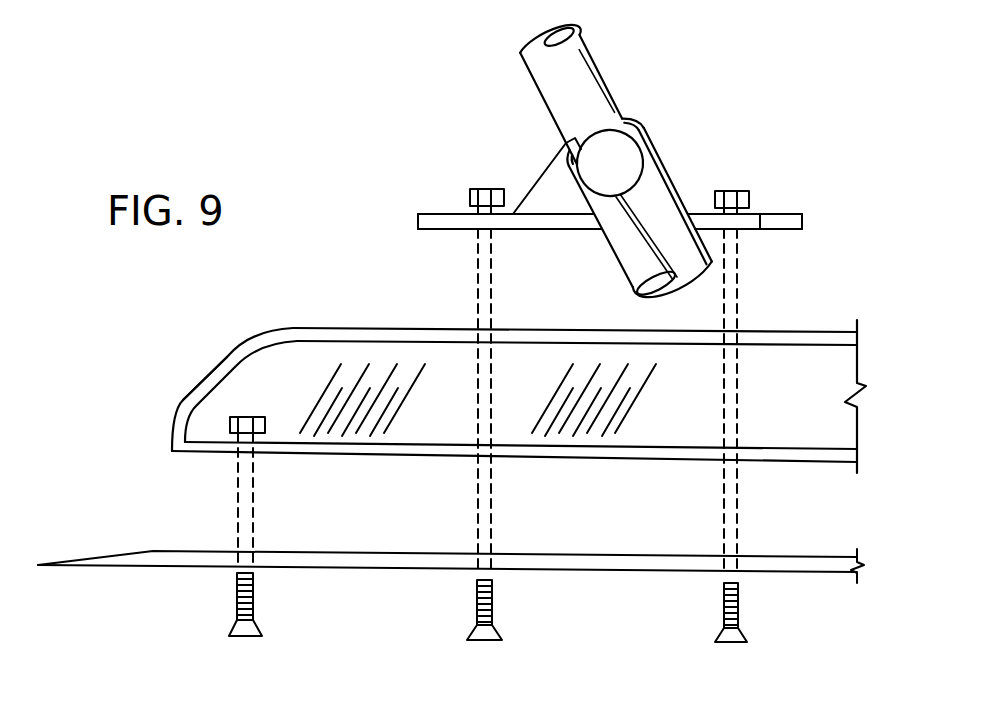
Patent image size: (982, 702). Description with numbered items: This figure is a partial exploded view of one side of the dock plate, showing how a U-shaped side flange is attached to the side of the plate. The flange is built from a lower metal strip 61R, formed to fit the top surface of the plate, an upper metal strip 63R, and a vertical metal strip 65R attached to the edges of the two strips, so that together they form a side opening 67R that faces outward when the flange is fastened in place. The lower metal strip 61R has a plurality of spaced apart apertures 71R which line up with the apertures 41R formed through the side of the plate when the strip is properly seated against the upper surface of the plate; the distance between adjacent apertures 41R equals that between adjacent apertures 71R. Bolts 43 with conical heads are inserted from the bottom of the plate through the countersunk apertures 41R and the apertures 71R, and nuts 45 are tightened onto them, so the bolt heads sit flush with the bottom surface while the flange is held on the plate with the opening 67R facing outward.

The apertures 41R is at (233, 558).
The bolts 43 is at (256, 615).
The nuts 45 is at (228, 416).
The lower metal strip 61R is at (657, 462).
The upper metal strip 63R is at (293, 327).
The vertical metal strip 65R is at (277, 380).
The side opening 67R is at (380, 368).
The apertures 71R is at (473, 464).